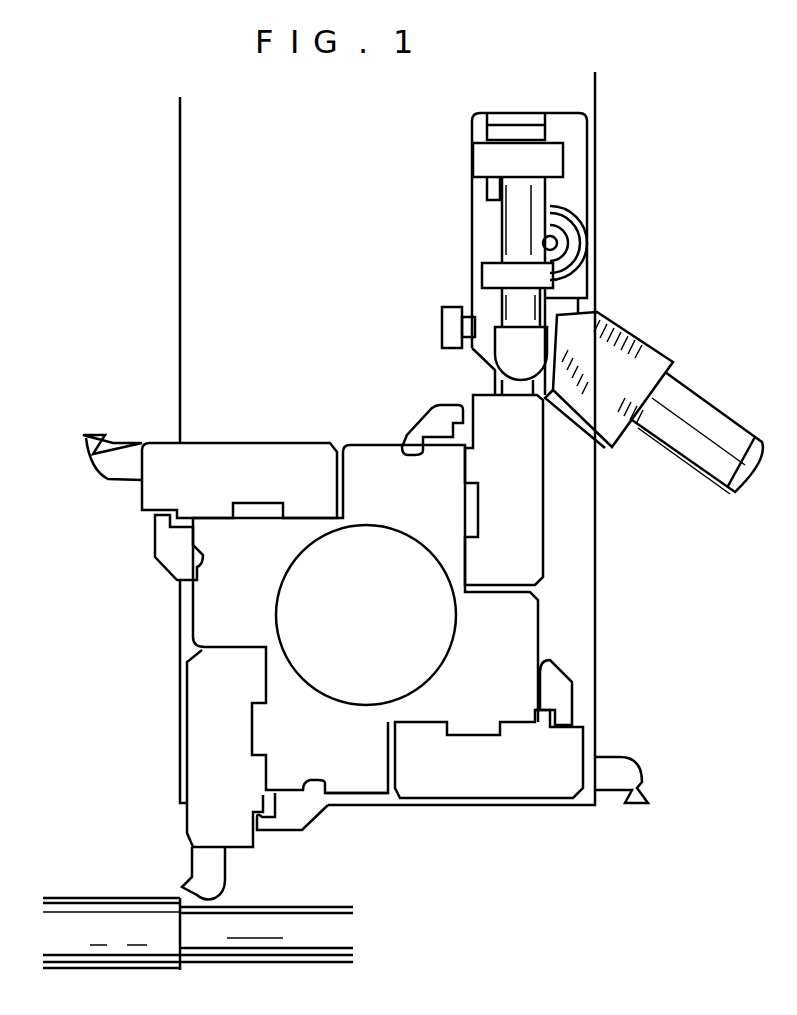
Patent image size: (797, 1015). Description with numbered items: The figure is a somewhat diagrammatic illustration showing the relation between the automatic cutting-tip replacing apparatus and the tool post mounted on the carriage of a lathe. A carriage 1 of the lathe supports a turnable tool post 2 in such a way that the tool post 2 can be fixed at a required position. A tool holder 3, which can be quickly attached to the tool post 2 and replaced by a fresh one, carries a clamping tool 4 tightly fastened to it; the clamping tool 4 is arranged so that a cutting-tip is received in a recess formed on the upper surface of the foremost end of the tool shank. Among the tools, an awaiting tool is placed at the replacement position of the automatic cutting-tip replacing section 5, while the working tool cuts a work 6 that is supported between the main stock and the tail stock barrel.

The carriage 1 is at (193, 260).
The tool post 2 is at (520, 627).
The tool holder 3 is at (527, 783).
The clamping tool 4 is at (203, 860).
The automatic cutting-tip replacing section 5 is at (638, 325).
The work 6 is at (93, 912).